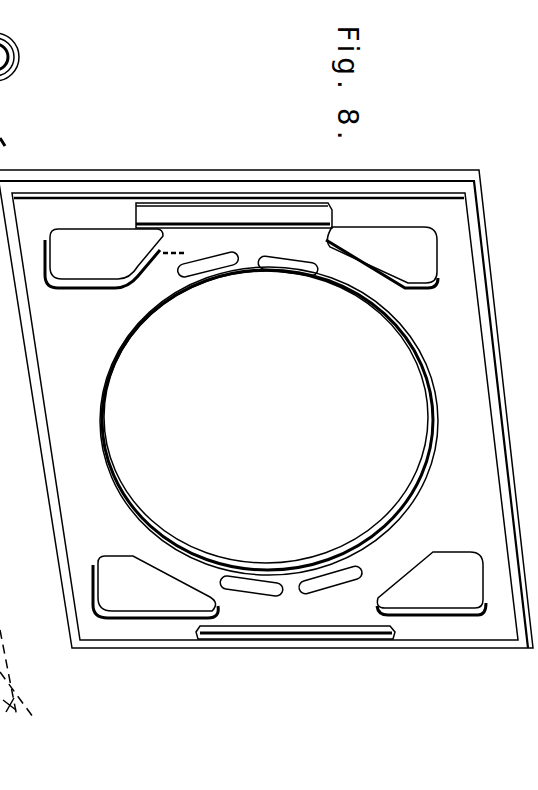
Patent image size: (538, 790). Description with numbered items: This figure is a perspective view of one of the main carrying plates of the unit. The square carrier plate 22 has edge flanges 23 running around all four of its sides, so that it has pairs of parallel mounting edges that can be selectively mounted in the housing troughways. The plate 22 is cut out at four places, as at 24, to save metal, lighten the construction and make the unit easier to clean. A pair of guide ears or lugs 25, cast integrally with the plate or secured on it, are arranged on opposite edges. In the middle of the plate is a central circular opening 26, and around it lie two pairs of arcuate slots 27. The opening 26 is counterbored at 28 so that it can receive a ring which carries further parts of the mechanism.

The carrier plate 22 is at (429, 207).
The edge flanges 23 is at (458, 183).
The cut out 24 is at (394, 235).
The guide ears or lugs 25 is at (238, 627).
The central circular opening 26 is at (263, 552).
The arcuate slots 27 is at (210, 263).
The counterbore 28 is at (288, 572).